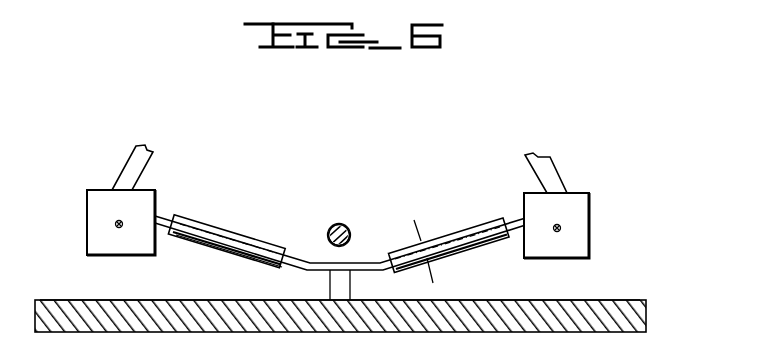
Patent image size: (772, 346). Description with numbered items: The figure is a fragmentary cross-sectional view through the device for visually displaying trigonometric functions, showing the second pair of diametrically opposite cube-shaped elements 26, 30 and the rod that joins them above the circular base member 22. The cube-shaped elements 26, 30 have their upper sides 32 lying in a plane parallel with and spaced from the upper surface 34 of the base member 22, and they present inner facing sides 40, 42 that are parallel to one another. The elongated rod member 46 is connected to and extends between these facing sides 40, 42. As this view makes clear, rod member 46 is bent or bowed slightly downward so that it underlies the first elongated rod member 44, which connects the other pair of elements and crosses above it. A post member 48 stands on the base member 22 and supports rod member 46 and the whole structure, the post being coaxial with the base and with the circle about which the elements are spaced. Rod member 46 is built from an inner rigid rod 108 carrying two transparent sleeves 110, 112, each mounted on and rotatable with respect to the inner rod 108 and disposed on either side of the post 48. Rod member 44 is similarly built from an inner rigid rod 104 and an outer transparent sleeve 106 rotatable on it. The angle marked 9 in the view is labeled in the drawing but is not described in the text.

The circular base member 22 is at (647, 315).
The cube-shaped element 26 is at (590, 222).
The cube-shaped element 30 is at (86, 217).
The upper sides 32 is at (102, 188).
The upper surface 34 is at (612, 301).
The inner facing side 40 is at (523, 202).
The inner facing side 42 is at (157, 196).
The first elongated rod member 44 is at (333, 225).
The elongated rod member 46 is at (228, 232).
The post member 48 is at (329, 285).
The inner rigid rod 104 is at (350, 230).
The outer transparent sleeve 106 is at (343, 226).
The inner rigid rod 108 is at (313, 258).
The transparent sleeve 110 is at (204, 244).
The transparent sleeve 112 is at (478, 247).
The angle theta 9 is at (418, 223).